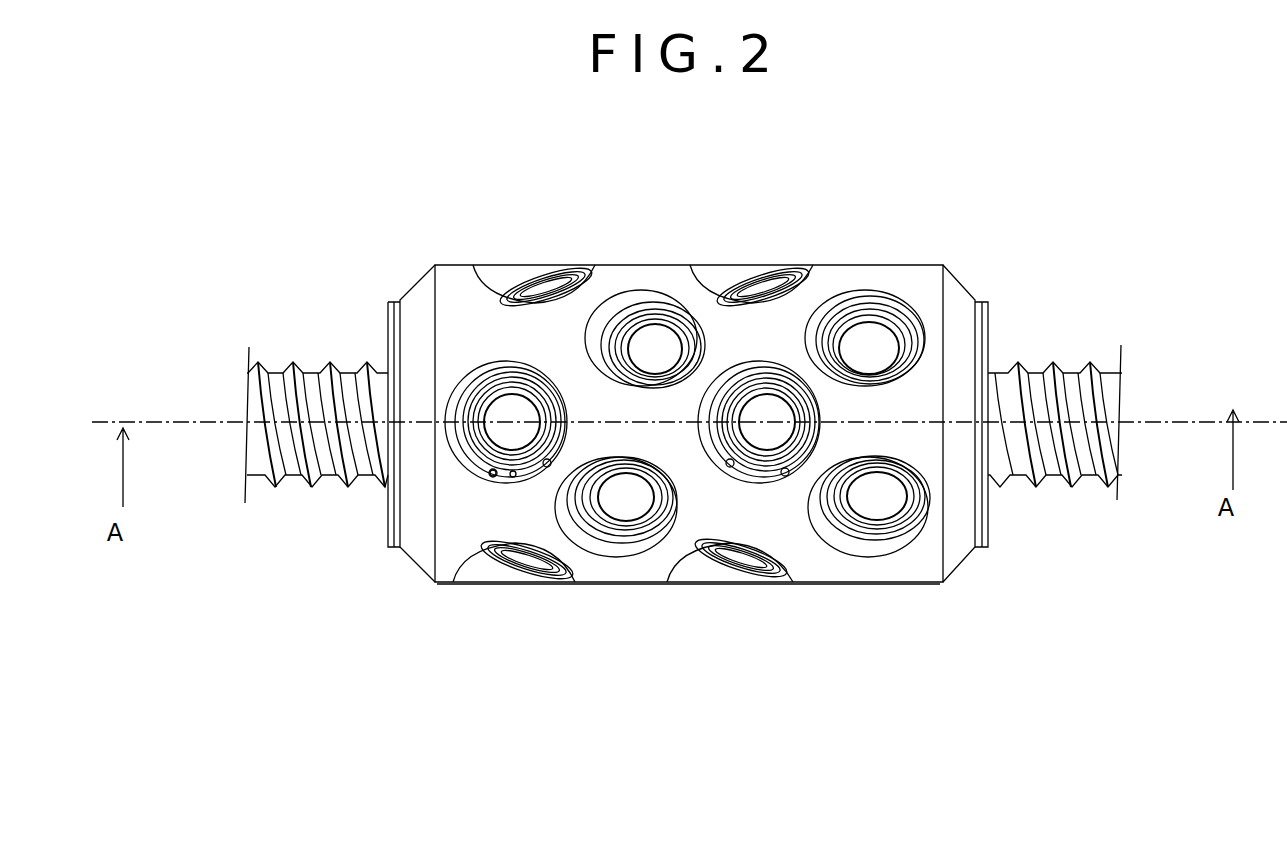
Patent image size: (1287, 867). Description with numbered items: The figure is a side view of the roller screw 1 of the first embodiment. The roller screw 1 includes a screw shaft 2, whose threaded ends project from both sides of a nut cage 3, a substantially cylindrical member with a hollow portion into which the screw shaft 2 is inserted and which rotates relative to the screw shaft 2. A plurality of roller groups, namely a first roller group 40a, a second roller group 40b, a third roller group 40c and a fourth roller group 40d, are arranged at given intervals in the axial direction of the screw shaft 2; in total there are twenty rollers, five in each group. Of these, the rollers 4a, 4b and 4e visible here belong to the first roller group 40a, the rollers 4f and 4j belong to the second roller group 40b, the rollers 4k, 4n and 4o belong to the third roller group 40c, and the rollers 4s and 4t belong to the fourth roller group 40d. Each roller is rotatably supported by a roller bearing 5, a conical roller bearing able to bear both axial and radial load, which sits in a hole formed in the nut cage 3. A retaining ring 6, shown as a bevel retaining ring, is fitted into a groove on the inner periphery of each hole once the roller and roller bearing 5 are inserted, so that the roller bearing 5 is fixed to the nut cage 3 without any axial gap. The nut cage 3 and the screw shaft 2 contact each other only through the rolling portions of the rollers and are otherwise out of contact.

The roller screw 1 is at (1050, 212).
The screw shaft 2 is at (307, 370).
The nut cage 3 is at (453, 278).
The roller 4a is at (512, 400).
The roller 4b is at (532, 562).
The roller 4e is at (556, 300).
The roller 4f is at (637, 510).
The roller 4j is at (657, 340).
The roller 4k is at (745, 562).
The roller 4n is at (760, 300).
The roller 4o is at (778, 400).
The roller 4s is at (873, 330).
The roller 4t is at (877, 512).
The roller bearing 5 is at (513, 478).
The retaining ring 6 is at (495, 476).
The first roller group 40a is at (513, 676).
The second roller group 40b is at (597, 631).
The third roller group 40c is at (705, 631).
The fourth roller group 40d is at (835, 606).